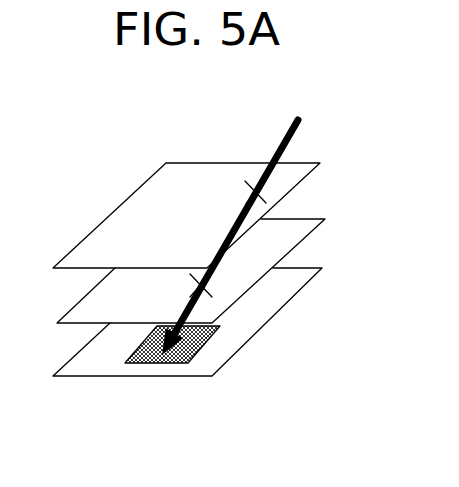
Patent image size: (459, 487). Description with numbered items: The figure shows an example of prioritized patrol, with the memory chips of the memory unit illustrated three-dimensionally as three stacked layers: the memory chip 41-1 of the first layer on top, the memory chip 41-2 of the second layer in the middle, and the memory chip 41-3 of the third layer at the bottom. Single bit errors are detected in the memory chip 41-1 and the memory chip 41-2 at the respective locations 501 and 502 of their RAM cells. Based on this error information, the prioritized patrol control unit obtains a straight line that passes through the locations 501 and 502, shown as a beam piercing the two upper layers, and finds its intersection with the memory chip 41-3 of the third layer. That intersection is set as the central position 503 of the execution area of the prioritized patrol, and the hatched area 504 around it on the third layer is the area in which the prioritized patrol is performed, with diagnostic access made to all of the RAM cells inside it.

The memory chip of the first layer 41-1 is at (137, 190).
The memory chip of the second layer 41-2 is at (91, 291).
The memory chip of the third layer 41-3 is at (84, 347).
The location of the RAM cell of the first layer 501 is at (284, 189).
The location of the RAM cell of the second layer 502 is at (234, 281).
The central position 503 is at (198, 352).
The area 504 is at (135, 363).